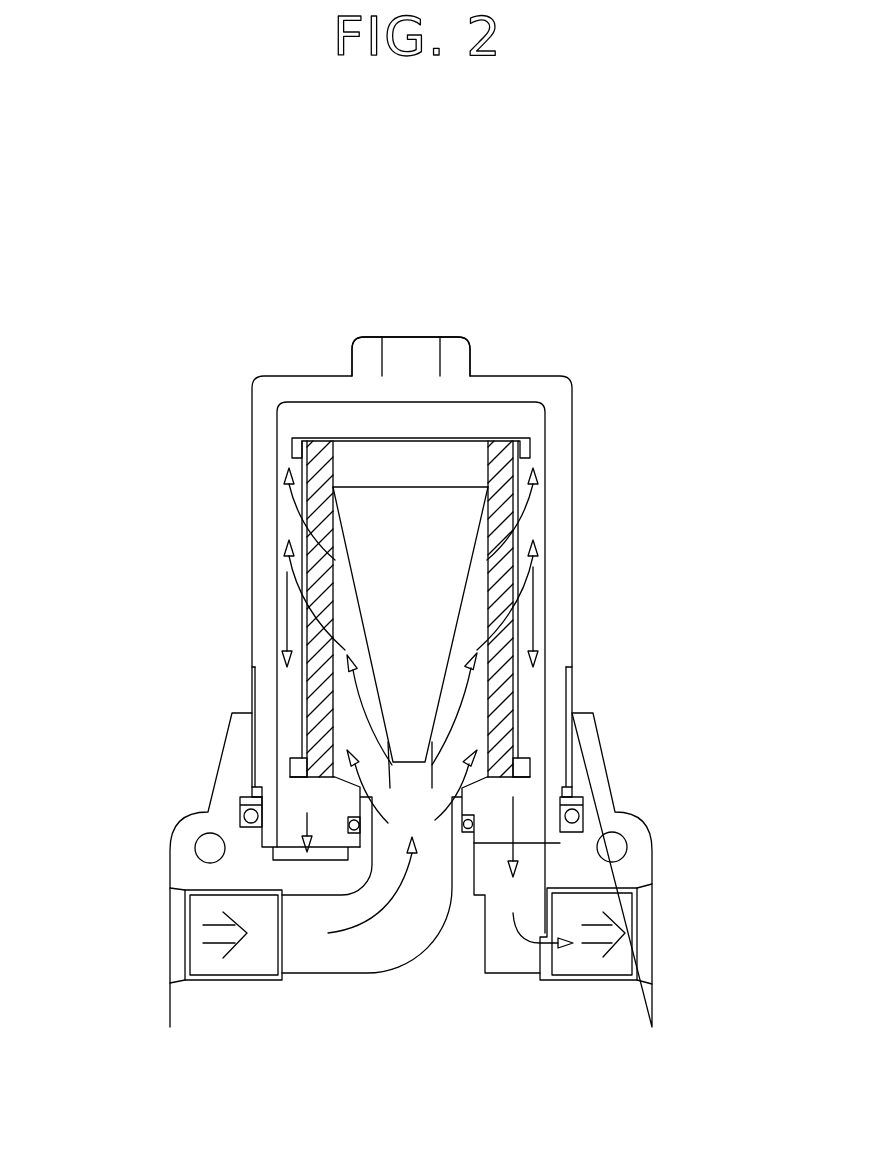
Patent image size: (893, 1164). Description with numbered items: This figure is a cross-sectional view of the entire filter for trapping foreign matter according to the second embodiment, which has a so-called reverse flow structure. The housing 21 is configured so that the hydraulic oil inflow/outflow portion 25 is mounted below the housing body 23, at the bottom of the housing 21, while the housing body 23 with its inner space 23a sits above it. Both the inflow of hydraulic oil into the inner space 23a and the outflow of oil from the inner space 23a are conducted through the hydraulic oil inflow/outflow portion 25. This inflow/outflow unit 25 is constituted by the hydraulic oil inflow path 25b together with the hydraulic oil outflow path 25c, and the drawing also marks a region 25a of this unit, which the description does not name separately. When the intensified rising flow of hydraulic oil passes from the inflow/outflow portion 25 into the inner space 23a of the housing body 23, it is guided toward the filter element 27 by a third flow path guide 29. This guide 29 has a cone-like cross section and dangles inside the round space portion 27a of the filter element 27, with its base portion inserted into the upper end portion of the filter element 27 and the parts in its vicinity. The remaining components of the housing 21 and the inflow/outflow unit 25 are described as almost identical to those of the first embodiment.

The housing 21 is at (643, 608).
The housing body 23 is at (572, 655).
The inner space 23a is at (532, 515).
The hydraulic oil inflow/outflow portion 25 is at (598, 1027).
The inlet port 25a is at (183, 949).
The hydraulic oil inflow path 25b is at (262, 962).
The hydraulic oil outflow path 25c is at (627, 958).
The filter element 27 is at (520, 728).
The round space portion 27a is at (470, 697).
The third flow path guide 29 is at (345, 642).